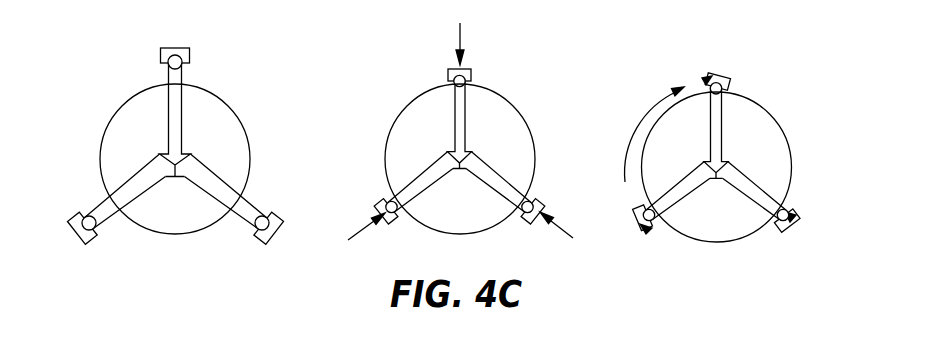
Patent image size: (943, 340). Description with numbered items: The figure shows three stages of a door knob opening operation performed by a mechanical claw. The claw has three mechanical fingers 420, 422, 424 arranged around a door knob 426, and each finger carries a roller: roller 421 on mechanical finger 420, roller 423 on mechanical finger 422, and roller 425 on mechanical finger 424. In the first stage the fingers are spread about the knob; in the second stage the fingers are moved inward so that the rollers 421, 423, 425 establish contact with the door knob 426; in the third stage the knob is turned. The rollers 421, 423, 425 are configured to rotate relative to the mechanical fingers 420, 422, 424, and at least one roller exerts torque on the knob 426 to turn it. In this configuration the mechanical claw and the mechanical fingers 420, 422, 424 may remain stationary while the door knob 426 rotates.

The mechanical finger 420 is at (173, 48).
The roller 421 is at (167, 63).
The mechanical finger 422 is at (74, 212).
The roller 423 is at (88, 241).
The mechanical finger 424 is at (270, 208).
The roller 425 is at (261, 242).
The door knob 426 is at (220, 98).